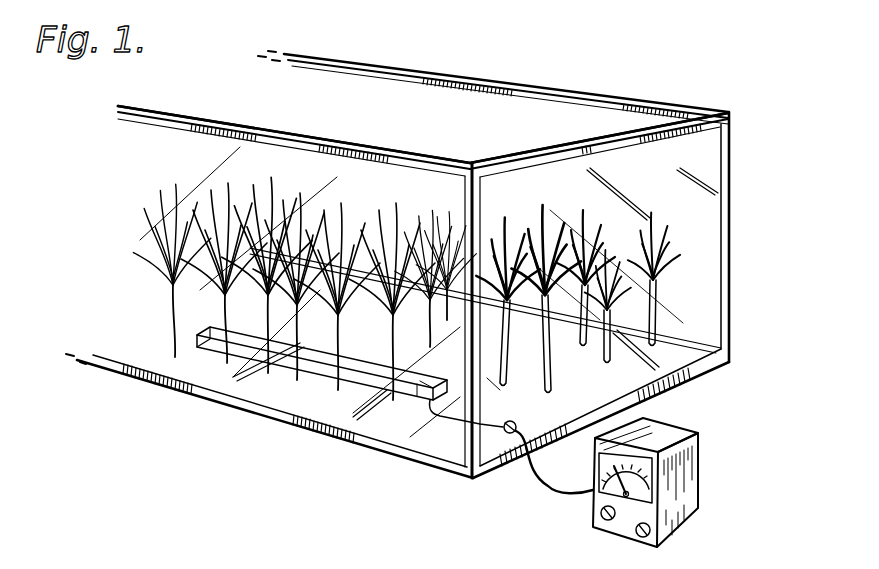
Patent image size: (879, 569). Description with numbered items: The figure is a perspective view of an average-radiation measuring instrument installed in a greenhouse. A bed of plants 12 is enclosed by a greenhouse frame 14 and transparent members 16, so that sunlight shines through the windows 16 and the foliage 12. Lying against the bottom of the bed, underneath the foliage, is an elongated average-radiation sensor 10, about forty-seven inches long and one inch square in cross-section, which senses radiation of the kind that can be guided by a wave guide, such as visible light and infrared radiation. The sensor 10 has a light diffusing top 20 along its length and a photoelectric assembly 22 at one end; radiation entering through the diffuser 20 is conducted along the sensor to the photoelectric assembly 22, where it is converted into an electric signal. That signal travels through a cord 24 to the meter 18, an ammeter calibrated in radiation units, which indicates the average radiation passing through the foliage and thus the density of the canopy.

The average-radiation sensor 10 is at (420, 418).
The bed of plants 12 is at (688, 256).
The greenhouse frame 14 is at (218, 84).
The transparent members 16 is at (178, 160).
The meter 18 is at (708, 480).
The light diffusing top 20 is at (386, 359).
The photoelectric assembly 22 is at (407, 398).
The cord 24 is at (557, 497).